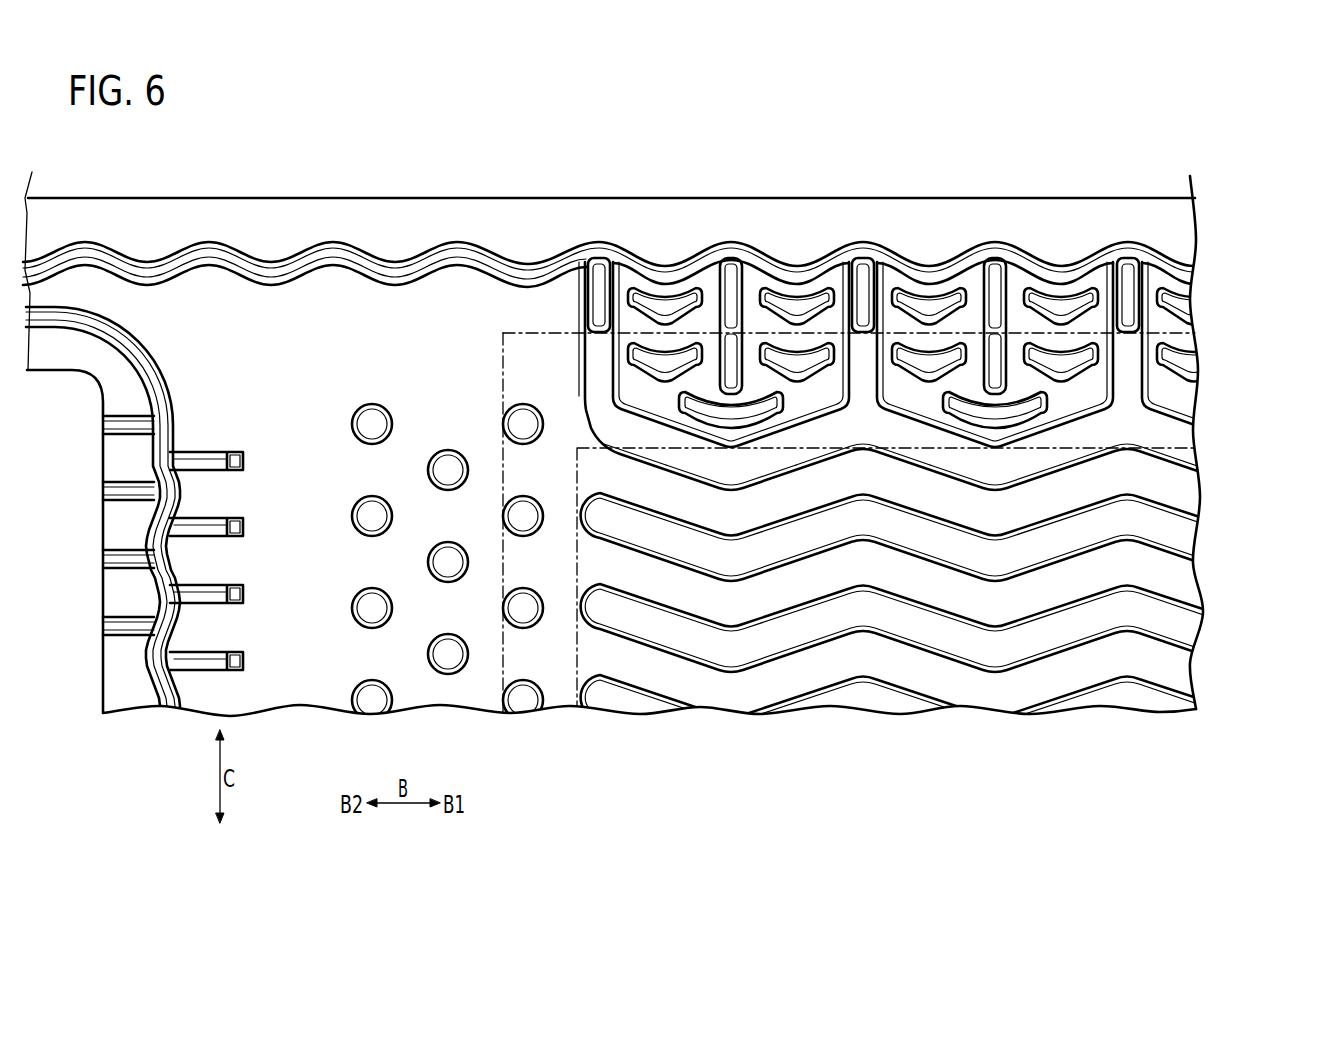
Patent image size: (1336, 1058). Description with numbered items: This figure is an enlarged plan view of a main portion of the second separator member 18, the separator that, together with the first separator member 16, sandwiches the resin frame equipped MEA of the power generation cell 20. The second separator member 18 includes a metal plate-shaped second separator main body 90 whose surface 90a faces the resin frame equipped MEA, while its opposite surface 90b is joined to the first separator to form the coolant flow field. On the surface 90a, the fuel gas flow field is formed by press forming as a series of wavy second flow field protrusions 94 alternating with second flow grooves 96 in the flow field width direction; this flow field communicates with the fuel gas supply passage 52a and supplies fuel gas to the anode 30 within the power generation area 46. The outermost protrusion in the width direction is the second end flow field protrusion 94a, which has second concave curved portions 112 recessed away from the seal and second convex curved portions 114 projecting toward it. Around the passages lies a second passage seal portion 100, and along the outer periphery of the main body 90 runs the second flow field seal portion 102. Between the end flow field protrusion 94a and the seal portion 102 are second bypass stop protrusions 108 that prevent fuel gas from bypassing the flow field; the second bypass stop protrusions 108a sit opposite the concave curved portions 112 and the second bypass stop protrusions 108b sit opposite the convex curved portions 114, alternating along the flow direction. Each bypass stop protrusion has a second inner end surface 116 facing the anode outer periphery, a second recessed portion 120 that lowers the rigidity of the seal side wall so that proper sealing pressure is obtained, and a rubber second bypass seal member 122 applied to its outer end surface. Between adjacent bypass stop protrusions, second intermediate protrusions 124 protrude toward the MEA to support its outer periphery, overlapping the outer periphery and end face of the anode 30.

The power generation cell 20 is at (1187, 126).
The second separator member 18 is at (500, 190).
The first separator member 16 is at (553, 190).
The second separator main body 90 is at (272, 198).
The surface 90a is at (332, 210).
The surface 90b is at (393, 210).
The fuel gas supply passage 52a is at (73, 663).
The second passage seal portion 100 is at (164, 352).
The anode 30 is at (528, 333).
The power generation area 46 is at (637, 448).
The second flow field seal portion 102 is at (649, 258).
The second inner end surface 116 is at (1130, 382).
The second recessed portion 120 is at (1123, 273).
The second bypass seal member 122 is at (1143, 307).
The second intermediate protrusion 124 is at (921, 355).
The second bypass stop protrusion 108 is at (686, 357).
The second bypass stop protrusion 108a is at (927, 307).
The second bypass stop protrusion 108b is at (823, 352).
The second flow field protrusion 94 is at (900, 700).
The second end flow field protrusion 94a is at (1168, 437).
The second concave curved portion 112 is at (737, 480).
The second convex curved portion 114 is at (865, 432).
The second flow groove 96 is at (793, 682).